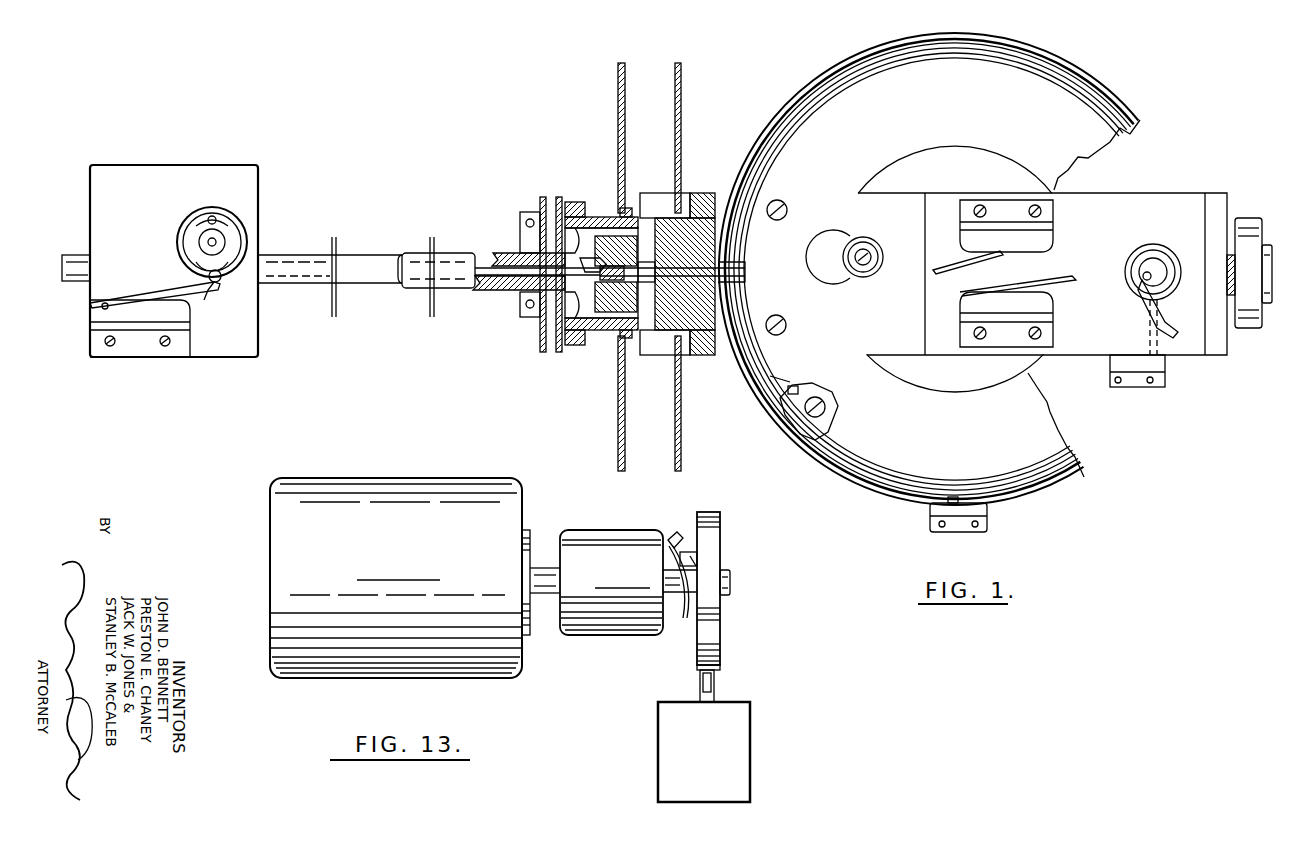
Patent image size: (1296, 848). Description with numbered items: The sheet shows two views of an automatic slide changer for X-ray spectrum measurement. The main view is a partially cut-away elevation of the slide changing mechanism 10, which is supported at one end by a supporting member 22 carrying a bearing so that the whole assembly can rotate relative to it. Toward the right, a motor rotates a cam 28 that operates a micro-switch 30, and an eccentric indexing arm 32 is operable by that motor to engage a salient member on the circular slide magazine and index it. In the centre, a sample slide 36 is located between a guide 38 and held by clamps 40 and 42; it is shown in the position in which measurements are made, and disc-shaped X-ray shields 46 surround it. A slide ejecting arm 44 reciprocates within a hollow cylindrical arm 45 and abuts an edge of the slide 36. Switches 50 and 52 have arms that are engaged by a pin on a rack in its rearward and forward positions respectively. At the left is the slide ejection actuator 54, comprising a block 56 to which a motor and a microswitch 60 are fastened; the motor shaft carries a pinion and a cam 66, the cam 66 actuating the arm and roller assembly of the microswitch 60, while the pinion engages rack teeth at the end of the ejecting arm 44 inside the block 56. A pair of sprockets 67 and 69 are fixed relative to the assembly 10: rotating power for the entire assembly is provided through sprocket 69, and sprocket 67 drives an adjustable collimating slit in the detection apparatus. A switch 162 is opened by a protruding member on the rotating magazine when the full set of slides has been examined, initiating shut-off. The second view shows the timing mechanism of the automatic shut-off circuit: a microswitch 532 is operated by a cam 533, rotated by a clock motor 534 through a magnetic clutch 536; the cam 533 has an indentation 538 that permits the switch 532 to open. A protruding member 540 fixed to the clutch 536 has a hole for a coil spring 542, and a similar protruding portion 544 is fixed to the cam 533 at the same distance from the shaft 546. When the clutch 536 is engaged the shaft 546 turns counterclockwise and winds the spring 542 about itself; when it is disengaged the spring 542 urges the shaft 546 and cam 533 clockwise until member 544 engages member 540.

In FIG. 1, the slide changing mechanism 10 is at (1160, 434).
In FIG. 1, the supporting member 22 is at (1246, 328).
In FIG. 1, the cam 28 is at (1132, 278).
In FIG. 1, the micro-switch 30 is at (1166, 378).
In FIG. 1, the eccentric indexing arm 32 is at (1162, 308).
In FIG. 1, the slide 36 is at (645, 280).
In FIG. 1, the guide 38 is at (652, 216).
In FIG. 1, the clamp 40 is at (618, 232).
In FIG. 1, the clamp 42 is at (613, 280).
In FIG. 1, the slide ejecting arm 44 is at (508, 290).
In FIG. 1, the hollow arm 45 is at (412, 254).
In FIG. 1, the X-ray shields 46 is at (618, 104).
In FIG. 1, the switch 50 is at (964, 306).
In FIG. 1, the switch 52 is at (1050, 240).
In FIG. 1, the slide ejection actuator 54 is at (238, 146).
In FIG. 1, the block 56 is at (259, 184).
In FIG. 1, the microswitch 60 is at (145, 344).
In FIG. 1, the cam 66 is at (233, 236).
In FIG. 1, the sprocket 67 is at (541, 200).
In FIG. 1, the sprocket 69 is at (559, 200).
In FIG. 1, the switch 162 is at (988, 524).
In FIG. 13, the microswitch 532 is at (750, 736).
In FIG. 13, the cam 533 is at (720, 512).
In FIG. 13, the clock motor 534 is at (438, 482).
In FIG. 13, the magnetic clutch 536 is at (610, 536).
In FIG. 13, the indentation 538 is at (716, 631).
In FIG. 13, the protruding member 540 is at (679, 538).
In FIG. 13, the coil spring 542 is at (682, 618).
In FIG. 13, the protruding portion 544 is at (700, 556).
In FIG. 13, the shaft 546 is at (730, 582).